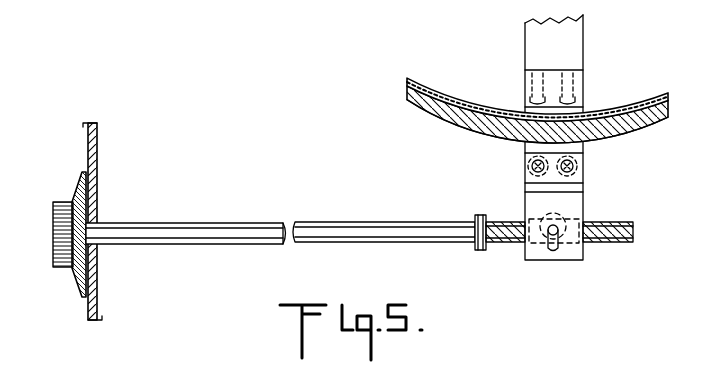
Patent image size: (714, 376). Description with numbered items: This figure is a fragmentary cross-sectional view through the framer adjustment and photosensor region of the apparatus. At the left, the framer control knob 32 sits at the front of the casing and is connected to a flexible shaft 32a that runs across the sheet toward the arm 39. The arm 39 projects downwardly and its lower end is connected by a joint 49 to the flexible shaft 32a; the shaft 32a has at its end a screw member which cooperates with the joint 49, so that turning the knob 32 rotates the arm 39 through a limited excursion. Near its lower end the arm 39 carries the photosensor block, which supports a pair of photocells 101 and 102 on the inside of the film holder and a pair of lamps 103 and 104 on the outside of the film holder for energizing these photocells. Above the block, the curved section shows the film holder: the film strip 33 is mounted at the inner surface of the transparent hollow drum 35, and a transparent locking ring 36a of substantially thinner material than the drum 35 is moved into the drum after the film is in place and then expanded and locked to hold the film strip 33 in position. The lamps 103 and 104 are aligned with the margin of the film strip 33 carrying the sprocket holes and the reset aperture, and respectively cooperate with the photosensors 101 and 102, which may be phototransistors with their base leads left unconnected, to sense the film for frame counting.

The framer control knob 32 is at (55, 203).
The flexible shaft 32a is at (401, 230).
The film strip 33 is at (432, 80).
The transparent hollow drum 35 is at (430, 101).
The transparent locking ring 36a is at (457, 88).
The arm 39 is at (567, 37).
The joint 49 is at (584, 262).
The photocell 101 is at (576, 80).
The photocell 102 is at (530, 92).
The lamp 103 is at (579, 168).
The lamp 104 is at (527, 170).